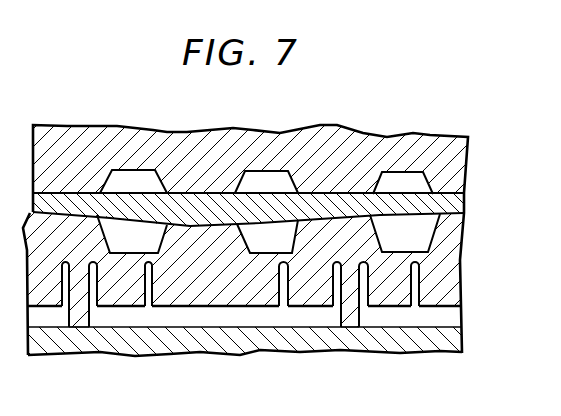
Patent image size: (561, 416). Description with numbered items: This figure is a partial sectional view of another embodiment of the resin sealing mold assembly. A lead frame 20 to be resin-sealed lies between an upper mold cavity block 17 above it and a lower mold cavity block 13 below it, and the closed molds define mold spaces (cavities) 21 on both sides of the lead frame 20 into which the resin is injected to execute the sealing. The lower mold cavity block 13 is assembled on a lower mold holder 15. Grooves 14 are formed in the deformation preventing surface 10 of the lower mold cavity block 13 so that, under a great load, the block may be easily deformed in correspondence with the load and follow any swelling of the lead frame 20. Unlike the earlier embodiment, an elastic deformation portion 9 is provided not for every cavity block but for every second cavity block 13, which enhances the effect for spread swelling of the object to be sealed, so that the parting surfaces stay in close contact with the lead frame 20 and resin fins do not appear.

The elastic deformation portion 9 is at (79, 317).
The deformation preventing surface 10 is at (205, 294).
The lower mold cavity block 13 is at (450, 290).
The grooves 14 is at (148, 309).
The lower mold holder 15 is at (452, 342).
The upper mold cavity block 17 is at (457, 164).
The lead frame 20 is at (459, 206).
The mold spaces (cavities) 21 is at (398, 178).